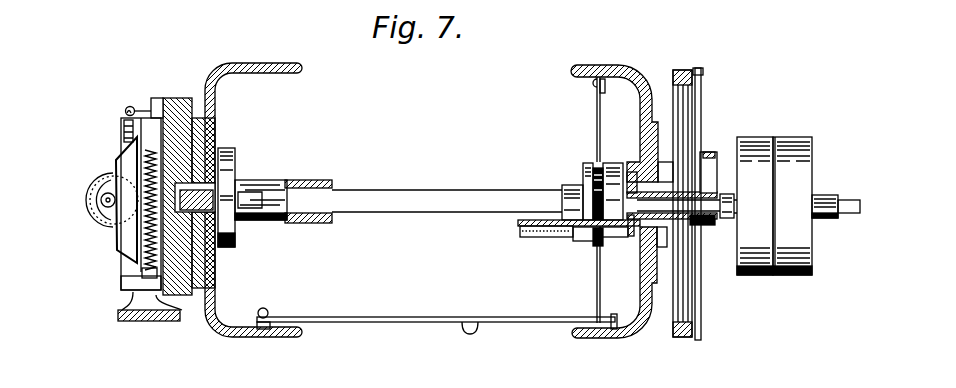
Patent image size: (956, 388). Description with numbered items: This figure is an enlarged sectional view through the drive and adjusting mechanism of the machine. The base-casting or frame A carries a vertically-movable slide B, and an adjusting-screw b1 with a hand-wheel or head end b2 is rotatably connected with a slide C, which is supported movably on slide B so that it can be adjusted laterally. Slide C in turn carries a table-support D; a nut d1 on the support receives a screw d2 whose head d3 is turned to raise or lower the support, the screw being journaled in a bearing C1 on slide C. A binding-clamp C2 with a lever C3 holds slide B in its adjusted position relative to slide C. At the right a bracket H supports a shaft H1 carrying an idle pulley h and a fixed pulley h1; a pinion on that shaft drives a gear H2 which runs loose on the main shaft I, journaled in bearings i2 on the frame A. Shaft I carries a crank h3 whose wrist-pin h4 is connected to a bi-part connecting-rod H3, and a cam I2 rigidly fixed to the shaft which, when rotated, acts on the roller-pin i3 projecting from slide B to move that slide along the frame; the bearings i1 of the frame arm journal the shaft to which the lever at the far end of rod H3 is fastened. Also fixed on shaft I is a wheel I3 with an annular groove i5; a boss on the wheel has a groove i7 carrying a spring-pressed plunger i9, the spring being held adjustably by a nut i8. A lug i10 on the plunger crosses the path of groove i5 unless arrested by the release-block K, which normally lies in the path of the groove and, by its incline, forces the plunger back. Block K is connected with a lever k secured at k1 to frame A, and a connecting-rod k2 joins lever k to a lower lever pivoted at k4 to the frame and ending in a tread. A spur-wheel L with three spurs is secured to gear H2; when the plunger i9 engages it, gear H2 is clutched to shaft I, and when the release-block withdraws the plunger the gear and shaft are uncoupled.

The base-casting or frame A is at (576, 69).
The vertically-movable slide B is at (164, 98).
The slide C is at (152, 106).
The bearing C1 is at (103, 202).
The binding-clamp C2 is at (126, 113).
The lever C3 is at (126, 111).
The table-support D is at (116, 161).
The nut d1 is at (104, 208).
The screw d2 is at (101, 199).
The head d3 is at (106, 230).
The adjusting-screw b1 is at (120, 279).
The hand-wheel or head end b2 is at (164, 322).
The shaft I is at (401, 200).
The cam I2 is at (237, 158).
The roller-pin i3 is at (240, 203).
The bearings i1 is at (299, 226).
The wheel I3 is at (586, 180).
The annular groove i5 is at (596, 167).
The spur-wheel L is at (613, 173).
The bearing bushing i is at (630, 153).
The bearings i2 is at (664, 172).
The crank h3 is at (707, 228).
The wrist-pin h4 is at (715, 156).
The pulley h1 is at (755, 206).
The idle pulley h is at (774, 206).
The bracket H is at (824, 220).
The shaft H1 is at (848, 200).
The gear H2 is at (692, 328).
The bi-part connecting-rod H3 is at (700, 336).
The lever k is at (377, 320).
The pivot k1 is at (281, 304).
The connecting-rod k2 is at (464, 328).
The pivot k4 is at (624, 333).
The nut i8 is at (521, 223).
The groove i7 is at (539, 226).
The lug i10 is at (587, 231).
The release-block K is at (596, 248).
The plunger i9 is at (603, 246).